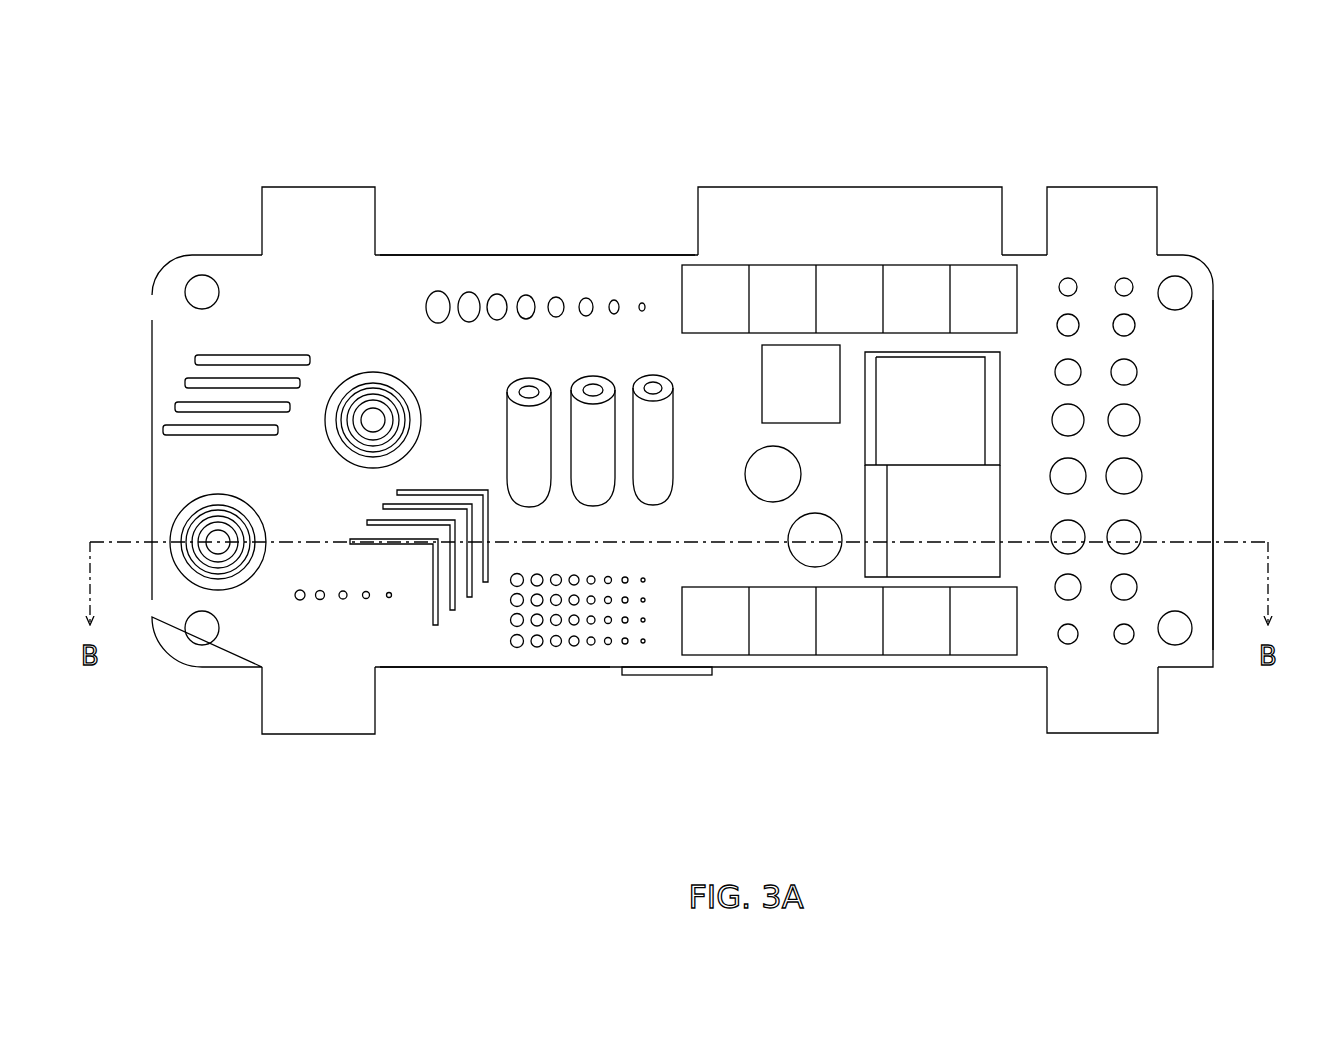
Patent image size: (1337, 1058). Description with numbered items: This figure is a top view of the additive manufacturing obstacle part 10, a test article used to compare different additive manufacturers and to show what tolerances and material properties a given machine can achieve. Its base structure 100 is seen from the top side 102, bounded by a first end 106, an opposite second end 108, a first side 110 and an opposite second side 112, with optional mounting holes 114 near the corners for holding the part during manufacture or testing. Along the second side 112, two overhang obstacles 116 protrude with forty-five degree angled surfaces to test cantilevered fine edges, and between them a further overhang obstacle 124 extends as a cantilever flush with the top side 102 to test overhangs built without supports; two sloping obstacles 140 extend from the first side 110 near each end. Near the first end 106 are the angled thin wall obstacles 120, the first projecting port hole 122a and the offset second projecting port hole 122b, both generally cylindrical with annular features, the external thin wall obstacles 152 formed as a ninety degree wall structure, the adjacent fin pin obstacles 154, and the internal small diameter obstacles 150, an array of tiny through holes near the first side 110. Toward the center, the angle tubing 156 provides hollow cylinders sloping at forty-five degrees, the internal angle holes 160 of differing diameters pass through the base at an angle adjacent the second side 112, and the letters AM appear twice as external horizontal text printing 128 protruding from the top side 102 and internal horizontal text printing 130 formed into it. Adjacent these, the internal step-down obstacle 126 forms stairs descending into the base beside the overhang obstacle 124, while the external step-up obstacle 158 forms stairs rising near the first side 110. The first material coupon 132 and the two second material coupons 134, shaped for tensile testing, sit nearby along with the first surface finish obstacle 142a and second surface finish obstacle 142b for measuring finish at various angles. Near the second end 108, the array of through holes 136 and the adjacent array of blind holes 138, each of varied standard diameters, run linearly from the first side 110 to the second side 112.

The additive manufacturing obstacle part 10 is at (498, 124).
The base structure 100 is at (315, 275).
The top side 102 is at (170, 450).
The first end 106 is at (152, 348).
The second end 108 is at (1215, 358).
The first side 110 is at (507, 668).
The second side 112 is at (553, 255).
The mounting holes 114 is at (185, 305).
The overhang obstacles 116 is at (357, 197).
The angled thin wall obstacles 120 is at (190, 405).
The first projecting port hole 122a is at (178, 552).
The second projecting port hole 122b is at (375, 380).
The overhang obstacle 124 is at (790, 220).
The internal step-down obstacle 126 is at (773, 295).
The external horizontal text printing 128 is at (684, 352).
The internal horizontal text printing 130 is at (717, 574).
The first material coupon 132 is at (800, 368).
The second material coupons 134 is at (813, 542).
The array of through holes 136 is at (1132, 470).
The array of blind holes 138 is at (1061, 646).
The sloping obstacles 140 is at (323, 700).
The first surface finish obstacle 142a is at (942, 558).
The second surface finish obstacle 142b is at (945, 385).
The internal small diameter obstacles 150 is at (632, 647).
The external thin wall obstacles 152 is at (437, 622).
The fin pin obstacles 154 is at (347, 598).
The angle tubing 156 is at (527, 393).
The external step-up obstacle 158 is at (787, 635).
The internal angle holes 160 is at (438, 296).